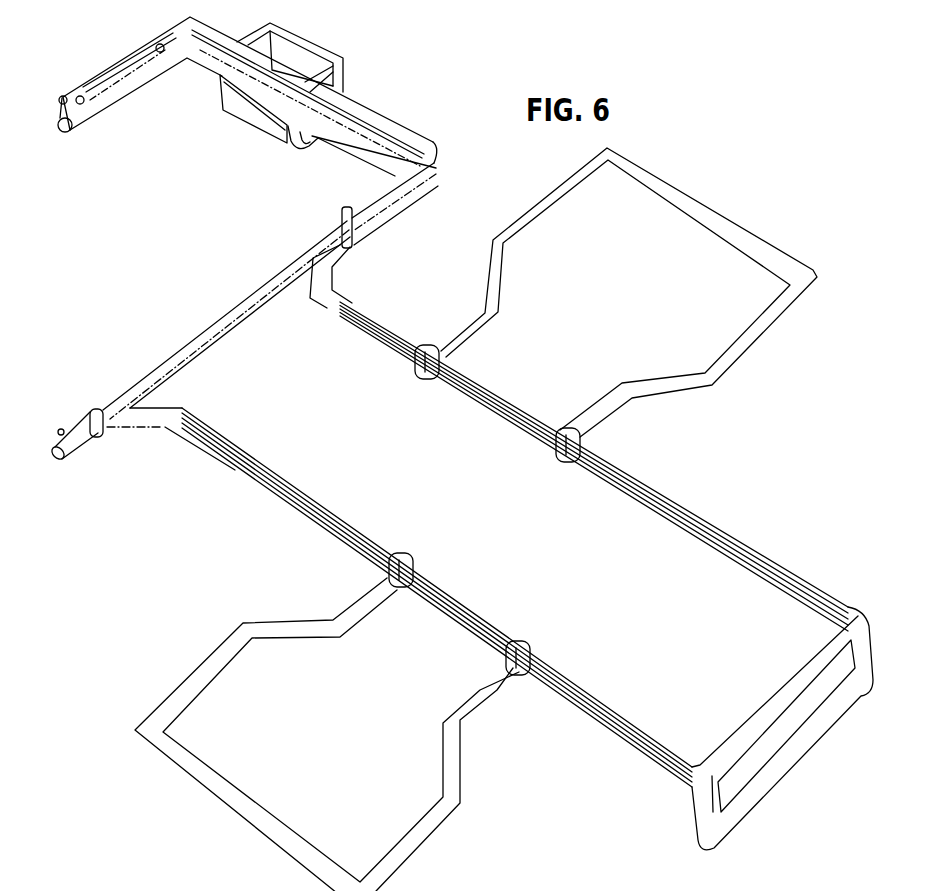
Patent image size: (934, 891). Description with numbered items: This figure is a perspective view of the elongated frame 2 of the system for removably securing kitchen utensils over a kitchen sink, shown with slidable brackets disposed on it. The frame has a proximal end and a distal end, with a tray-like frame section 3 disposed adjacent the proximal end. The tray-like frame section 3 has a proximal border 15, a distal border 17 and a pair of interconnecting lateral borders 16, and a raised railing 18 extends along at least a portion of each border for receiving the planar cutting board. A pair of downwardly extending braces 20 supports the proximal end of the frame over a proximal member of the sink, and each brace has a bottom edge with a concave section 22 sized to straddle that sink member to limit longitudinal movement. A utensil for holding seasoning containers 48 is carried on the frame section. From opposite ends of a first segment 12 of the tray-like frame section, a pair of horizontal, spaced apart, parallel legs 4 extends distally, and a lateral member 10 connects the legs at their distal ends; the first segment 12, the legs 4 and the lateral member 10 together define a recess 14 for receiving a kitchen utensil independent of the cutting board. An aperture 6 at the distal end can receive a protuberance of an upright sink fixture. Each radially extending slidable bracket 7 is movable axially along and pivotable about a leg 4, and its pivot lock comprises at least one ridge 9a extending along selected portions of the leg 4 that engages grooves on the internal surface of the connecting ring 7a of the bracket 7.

The elongated frame 2 is at (192, 452).
The tray-like frame section 3 is at (428, 134).
The parallel legs 4 is at (748, 545).
The aperture 6 is at (745, 765).
The slidable bracket 7 is at (727, 378).
The connecting ring 7a is at (560, 625).
The ridge 9a is at (397, 320).
The lateral member 10 is at (790, 672).
The first segment 12 is at (210, 350).
The recess 14 is at (660, 555).
The proximal border 15 is at (50, 115).
The lateral borders 16 is at (337, 127).
The distal border 17 is at (415, 205).
The raised railing 18 is at (110, 62).
The downwardly extending braces 20 is at (248, 130).
The concave section 22 is at (353, 152).
The utensil for holding seasoning containers 48 is at (305, 33).